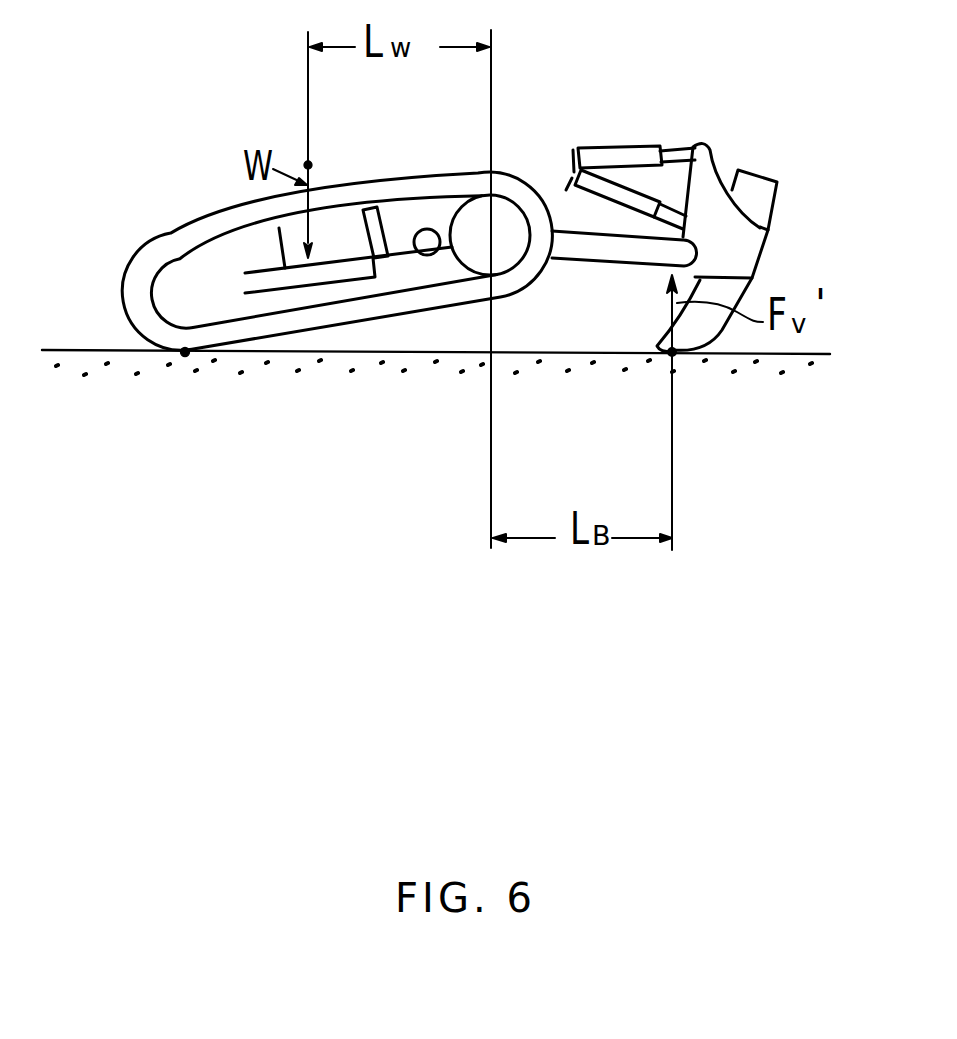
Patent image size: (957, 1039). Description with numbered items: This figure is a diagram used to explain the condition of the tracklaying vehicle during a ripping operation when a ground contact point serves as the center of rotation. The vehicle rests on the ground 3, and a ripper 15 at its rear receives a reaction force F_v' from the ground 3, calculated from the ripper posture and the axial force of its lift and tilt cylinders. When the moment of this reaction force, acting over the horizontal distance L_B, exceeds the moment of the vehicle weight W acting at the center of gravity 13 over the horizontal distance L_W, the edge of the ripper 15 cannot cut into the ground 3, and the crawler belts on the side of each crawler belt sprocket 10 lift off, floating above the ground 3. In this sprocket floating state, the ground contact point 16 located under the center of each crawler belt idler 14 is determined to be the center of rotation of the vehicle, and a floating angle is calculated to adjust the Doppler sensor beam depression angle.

The ground 3 is at (80, 350).
The crawler belt sprocket 10 is at (503, 230).
The center of gravity 13 is at (308, 165).
The crawler belt idler 14 is at (160, 267).
The ripper 15 is at (706, 193).
The ground contact point 16 is at (184, 357).